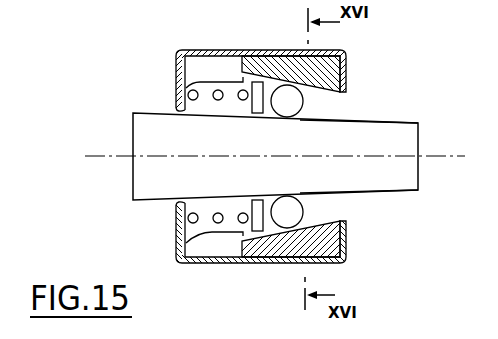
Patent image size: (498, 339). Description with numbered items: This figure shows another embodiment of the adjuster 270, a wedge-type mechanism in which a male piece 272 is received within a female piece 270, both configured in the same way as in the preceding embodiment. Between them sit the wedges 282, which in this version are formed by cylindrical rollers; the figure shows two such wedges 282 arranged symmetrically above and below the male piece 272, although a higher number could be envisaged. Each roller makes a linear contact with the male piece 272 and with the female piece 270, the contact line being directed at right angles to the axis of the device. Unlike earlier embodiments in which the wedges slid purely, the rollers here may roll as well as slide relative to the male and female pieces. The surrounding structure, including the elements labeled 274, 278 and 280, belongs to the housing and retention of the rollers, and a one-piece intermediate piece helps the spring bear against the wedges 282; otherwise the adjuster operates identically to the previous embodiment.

The female piece 270 is at (349, 73).
The male piece 272 is at (160, 172).
The shaft raceway surface 274 is at (385, 117).
The bearing housing shell 278 is at (283, 50).
The ball retainer cage 280 is at (185, 78).
The wedges 282 is at (290, 98).